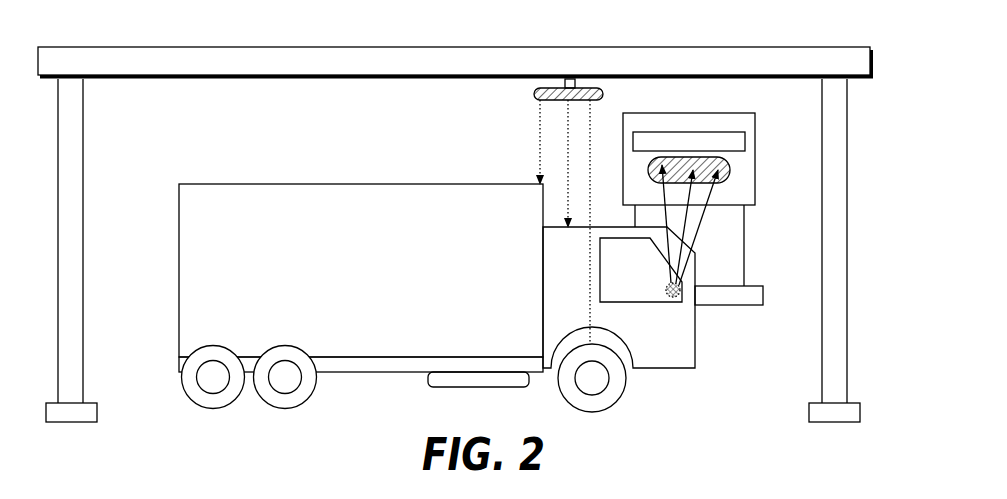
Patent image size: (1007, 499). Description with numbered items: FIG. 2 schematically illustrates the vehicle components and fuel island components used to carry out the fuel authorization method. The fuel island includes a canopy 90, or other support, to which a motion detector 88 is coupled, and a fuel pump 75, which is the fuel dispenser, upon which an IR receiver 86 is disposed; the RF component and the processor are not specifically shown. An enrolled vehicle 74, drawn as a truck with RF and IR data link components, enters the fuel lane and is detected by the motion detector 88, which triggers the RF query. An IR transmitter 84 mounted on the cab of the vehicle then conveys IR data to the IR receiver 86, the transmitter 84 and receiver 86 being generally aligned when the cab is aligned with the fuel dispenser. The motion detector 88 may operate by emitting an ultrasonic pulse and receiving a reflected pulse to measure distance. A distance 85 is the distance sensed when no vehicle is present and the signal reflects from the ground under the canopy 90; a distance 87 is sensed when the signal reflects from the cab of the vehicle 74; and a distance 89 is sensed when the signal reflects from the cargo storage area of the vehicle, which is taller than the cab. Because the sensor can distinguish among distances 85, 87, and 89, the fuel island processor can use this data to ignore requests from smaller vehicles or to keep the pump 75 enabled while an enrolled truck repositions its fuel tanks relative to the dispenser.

The enrolled vehicle 74 is at (338, 184).
The fuel pump 75 is at (755, 148).
The IR transmitter 84 is at (668, 296).
The distance 85 is at (590, 123).
The IR receiver 86 is at (727, 174).
The distance 87 is at (568, 128).
The motion detector 88 is at (550, 88).
The distance 89 is at (538, 124).
The canopy 90 is at (303, 80).